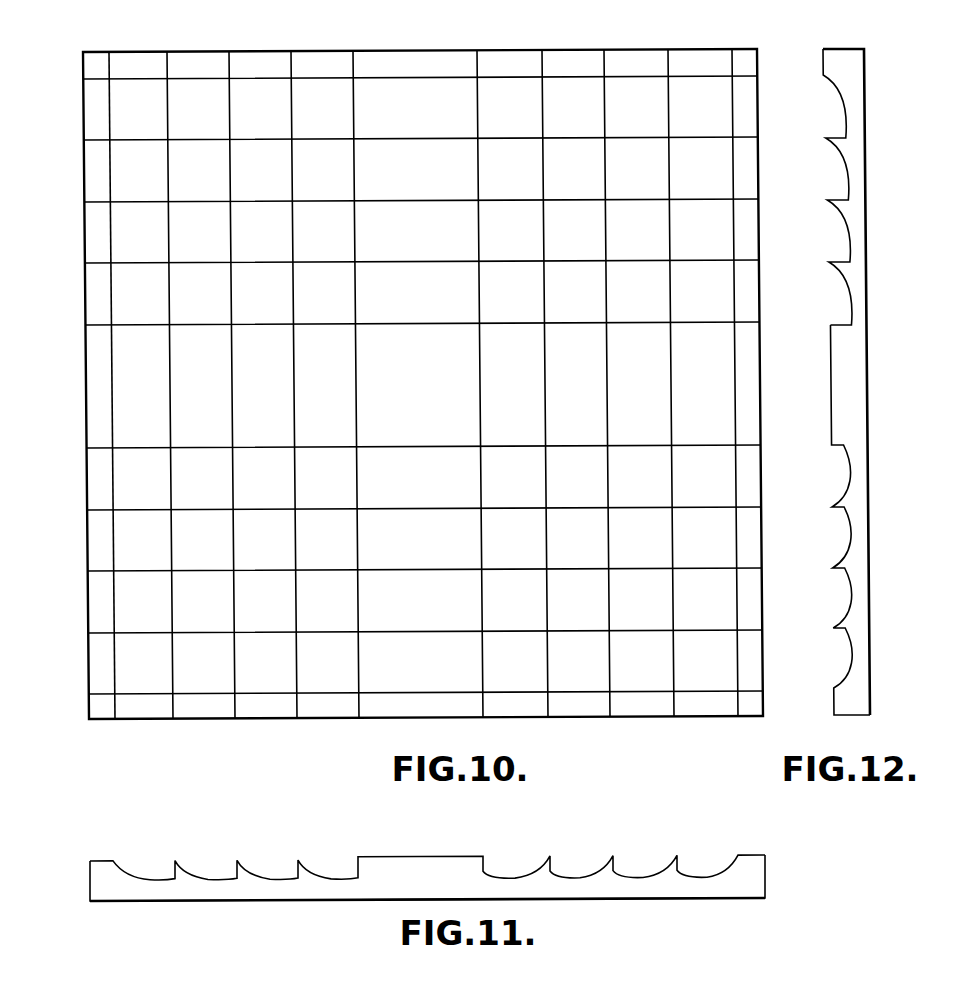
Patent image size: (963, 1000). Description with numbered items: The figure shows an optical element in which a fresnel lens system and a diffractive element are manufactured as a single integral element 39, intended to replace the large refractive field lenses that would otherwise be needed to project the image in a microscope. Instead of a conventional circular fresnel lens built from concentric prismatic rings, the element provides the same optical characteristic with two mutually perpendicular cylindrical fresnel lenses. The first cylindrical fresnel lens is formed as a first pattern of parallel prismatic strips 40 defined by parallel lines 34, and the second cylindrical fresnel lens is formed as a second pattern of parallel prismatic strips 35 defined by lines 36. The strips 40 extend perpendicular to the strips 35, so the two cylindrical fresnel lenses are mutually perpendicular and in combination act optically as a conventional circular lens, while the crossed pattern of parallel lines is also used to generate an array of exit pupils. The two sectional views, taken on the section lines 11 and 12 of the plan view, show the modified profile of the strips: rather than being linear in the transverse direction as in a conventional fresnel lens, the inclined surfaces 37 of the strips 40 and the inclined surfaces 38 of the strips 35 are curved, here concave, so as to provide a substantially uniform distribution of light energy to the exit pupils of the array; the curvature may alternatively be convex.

In FIG. 10, the section line 11— 11 is at (58, 534).
In FIG. 10, the section line 12— 12 is at (562, 15).
In FIG. 10, the parallel lines 34 is at (289, 46).
In FIG. 12, the parallel prismatic strips 35 is at (850, 535).
In FIG. 10, the lines 36 is at (97, 570).
In FIG. 11, the inclined surface 37 is at (260, 872).
In FIG. 12, the inclined surface 38 is at (838, 228).
In FIG. 10, the integral element 39 is at (421, 38).
In FIG. 10, the parallel prismatic strips 40 is at (226, 682).
In FIG. 11, the parallel prismatic strips 40 is at (272, 887).